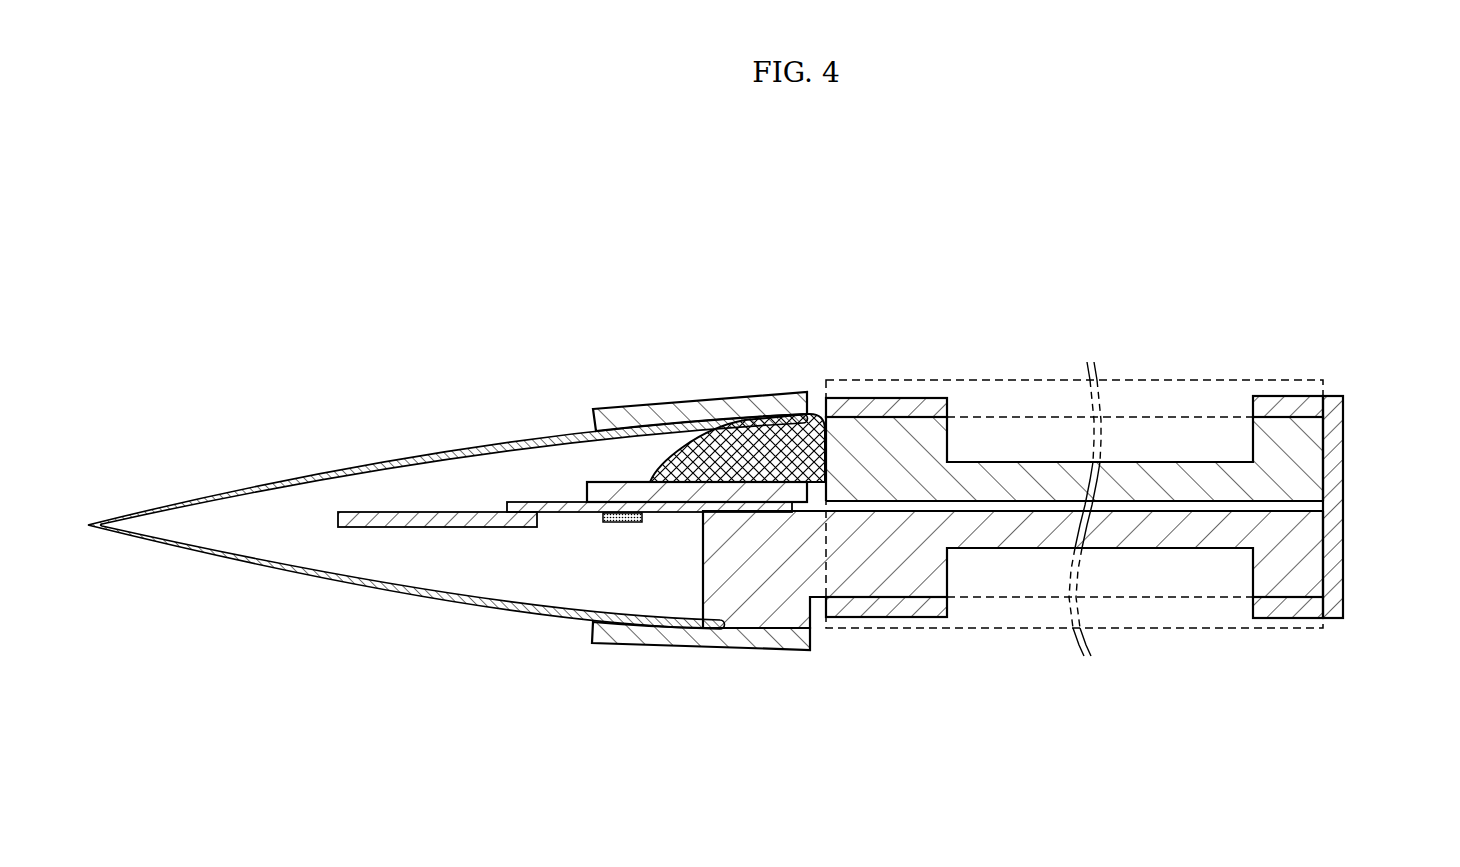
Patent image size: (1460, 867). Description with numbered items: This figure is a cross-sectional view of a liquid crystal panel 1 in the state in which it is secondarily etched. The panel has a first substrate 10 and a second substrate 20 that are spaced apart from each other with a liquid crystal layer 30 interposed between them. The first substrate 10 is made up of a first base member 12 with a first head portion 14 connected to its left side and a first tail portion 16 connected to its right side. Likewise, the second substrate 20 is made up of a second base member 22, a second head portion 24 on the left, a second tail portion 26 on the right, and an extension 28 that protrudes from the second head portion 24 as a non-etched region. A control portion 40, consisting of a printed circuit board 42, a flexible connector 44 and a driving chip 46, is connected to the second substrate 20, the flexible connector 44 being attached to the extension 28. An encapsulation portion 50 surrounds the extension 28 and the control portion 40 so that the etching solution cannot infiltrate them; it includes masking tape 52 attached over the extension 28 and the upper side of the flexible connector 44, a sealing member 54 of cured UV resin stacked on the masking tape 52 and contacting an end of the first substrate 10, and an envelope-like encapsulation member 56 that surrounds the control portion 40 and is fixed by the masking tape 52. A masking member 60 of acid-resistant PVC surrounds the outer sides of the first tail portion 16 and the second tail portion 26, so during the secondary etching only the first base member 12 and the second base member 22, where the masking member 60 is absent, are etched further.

The liquid crystal panel 1 is at (1183, 232).
The first substrate 10 is at (1330, 433).
The first base member 12 is at (1018, 465).
The first head portion 14 is at (850, 423).
The first tail portion 16 is at (1296, 423).
The second substrate 20 is at (1330, 563).
The second base member 22 is at (1012, 540).
The second head portion 24 is at (860, 588).
The second tail portion 26 is at (1288, 613).
The extension 28 is at (733, 595).
The liquid crystal layer 30 is at (1278, 507).
The control portion 40 is at (565, 405).
The printed circuit board 42 is at (420, 512).
The flexible connector 44 is at (530, 505).
The driving chip 46 is at (611, 420).
The encapsulation portion 50 is at (456, 530).
The masking tape 52 is at (747, 493).
The sealing member 54 is at (797, 428).
The encapsulation member 56 is at (226, 492).
The masking member 60 is at (925, 408).